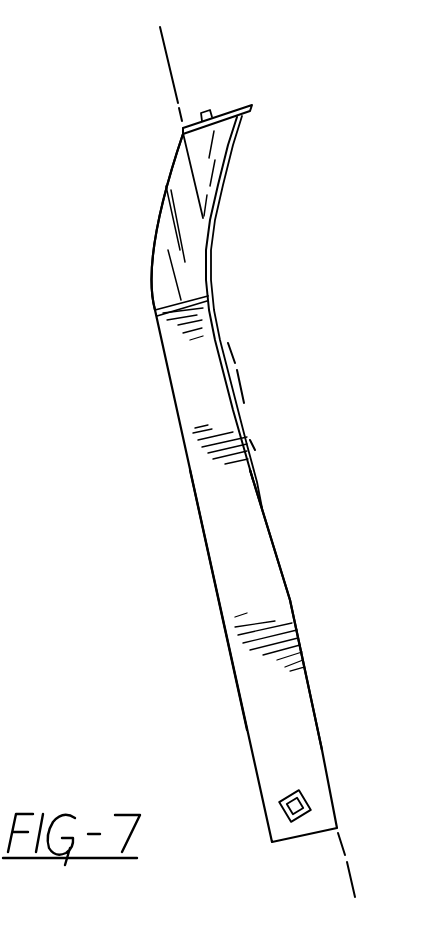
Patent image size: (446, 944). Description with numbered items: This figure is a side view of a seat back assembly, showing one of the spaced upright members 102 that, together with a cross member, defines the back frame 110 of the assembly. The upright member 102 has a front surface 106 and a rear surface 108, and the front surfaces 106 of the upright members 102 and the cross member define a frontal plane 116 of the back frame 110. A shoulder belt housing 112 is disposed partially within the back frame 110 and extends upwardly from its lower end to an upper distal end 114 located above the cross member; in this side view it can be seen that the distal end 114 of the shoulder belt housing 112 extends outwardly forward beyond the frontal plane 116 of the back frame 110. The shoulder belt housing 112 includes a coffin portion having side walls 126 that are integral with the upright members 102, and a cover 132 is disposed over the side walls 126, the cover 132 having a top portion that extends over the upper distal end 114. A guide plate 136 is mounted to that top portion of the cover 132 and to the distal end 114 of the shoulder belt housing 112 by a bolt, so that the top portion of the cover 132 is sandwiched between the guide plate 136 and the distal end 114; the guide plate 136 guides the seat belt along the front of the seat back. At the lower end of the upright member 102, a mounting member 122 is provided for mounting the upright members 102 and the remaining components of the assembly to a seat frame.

The upright member 102 is at (213, 504).
The front surface 106 is at (280, 567).
The rear surface 108 is at (219, 604).
The back frame 110 is at (204, 383).
The shoulder belt housing 112 is at (161, 227).
The upper distal end 114 is at (192, 120).
The frontal plane 116 is at (220, 306).
The mounting member 122 is at (310, 797).
The side wall 126 is at (196, 237).
The cover 132 is at (230, 153).
The guide plate 136 is at (224, 105).